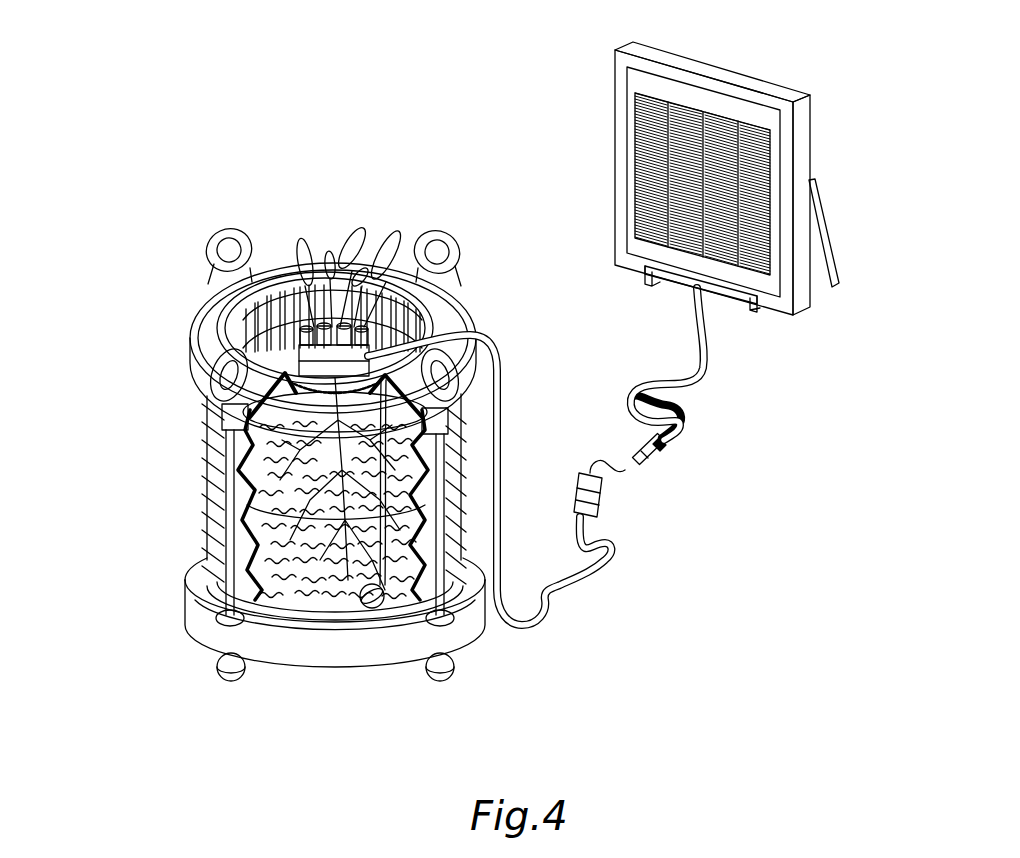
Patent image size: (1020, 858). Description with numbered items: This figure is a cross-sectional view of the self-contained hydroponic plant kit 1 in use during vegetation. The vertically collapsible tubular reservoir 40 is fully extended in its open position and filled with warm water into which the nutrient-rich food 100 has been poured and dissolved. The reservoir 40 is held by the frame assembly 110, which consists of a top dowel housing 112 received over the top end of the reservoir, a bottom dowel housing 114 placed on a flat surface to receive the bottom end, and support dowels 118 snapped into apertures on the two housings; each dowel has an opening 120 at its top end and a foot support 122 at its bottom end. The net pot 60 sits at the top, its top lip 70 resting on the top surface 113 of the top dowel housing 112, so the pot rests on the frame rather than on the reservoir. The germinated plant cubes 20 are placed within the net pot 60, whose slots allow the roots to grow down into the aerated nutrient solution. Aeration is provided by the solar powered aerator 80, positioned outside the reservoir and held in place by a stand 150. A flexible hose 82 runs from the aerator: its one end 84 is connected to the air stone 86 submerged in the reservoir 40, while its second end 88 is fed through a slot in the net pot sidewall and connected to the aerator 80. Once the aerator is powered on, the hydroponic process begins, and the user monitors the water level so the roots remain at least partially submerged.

The self-contained hydroponic plant kit 1 is at (140, 222).
The plant cube 20 is at (363, 312).
The vertically collapsible tubular reservoir 40 is at (215, 447).
The net pot 60 is at (279, 268).
The top lip 70 is at (436, 325).
The solar powered aerator 80 is at (676, 75).
The flexible hose 82 is at (580, 500).
The one end of the flexible hose 84 is at (380, 600).
The air stone 86 is at (370, 607).
The second end of the flexible hose 88 is at (636, 466).
The nutrient-rich food 100 is at (317, 603).
The frame assembly 110 is at (260, 262).
The top dowel housing 112 is at (455, 300).
The top surface of the top dowel housing 113 is at (462, 337).
The bottom dowel housing 114 is at (205, 571).
The support dowel 118 is at (449, 243).
The opening 120 is at (235, 242).
The foot support 122 is at (222, 676).
The stand 150 is at (817, 226).